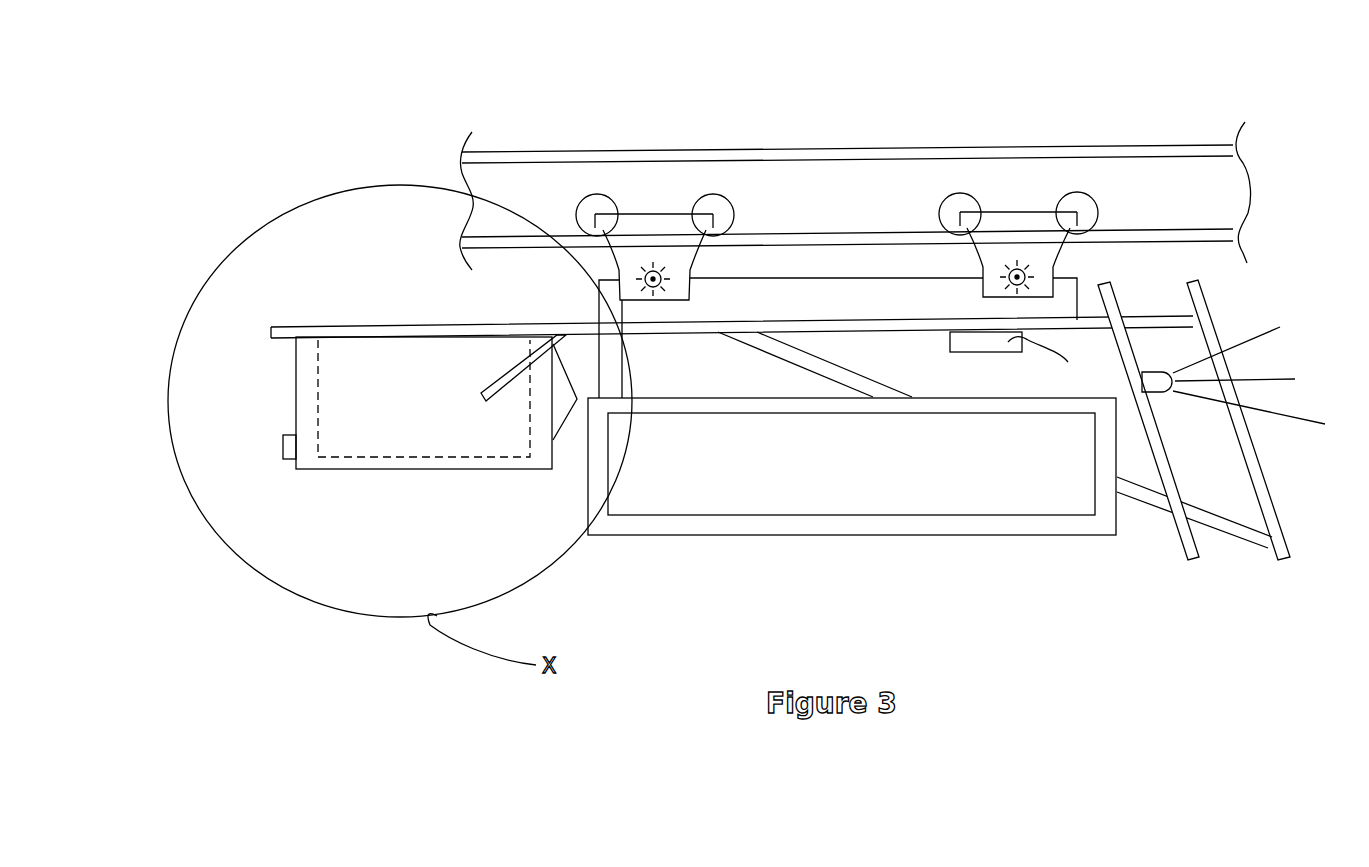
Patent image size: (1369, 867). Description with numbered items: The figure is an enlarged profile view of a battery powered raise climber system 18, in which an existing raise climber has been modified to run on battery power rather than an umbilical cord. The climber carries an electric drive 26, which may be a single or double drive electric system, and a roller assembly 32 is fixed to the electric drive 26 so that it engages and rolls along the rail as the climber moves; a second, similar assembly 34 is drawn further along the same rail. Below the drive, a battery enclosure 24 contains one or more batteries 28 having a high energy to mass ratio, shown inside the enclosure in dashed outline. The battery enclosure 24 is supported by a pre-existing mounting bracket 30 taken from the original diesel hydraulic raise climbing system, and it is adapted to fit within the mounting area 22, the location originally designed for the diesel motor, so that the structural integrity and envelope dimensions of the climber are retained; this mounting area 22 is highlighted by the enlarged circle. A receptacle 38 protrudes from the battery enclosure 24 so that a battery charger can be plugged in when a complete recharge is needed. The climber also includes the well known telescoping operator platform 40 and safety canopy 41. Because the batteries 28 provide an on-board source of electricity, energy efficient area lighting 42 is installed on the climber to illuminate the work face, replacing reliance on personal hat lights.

The battery powered raise climber system 18 is at (892, 569).
The mounting area 22 is at (353, 236).
The battery enclosure 24 is at (343, 470).
The electric drive 26 is at (833, 300).
The batteries 28 is at (440, 435).
The mounting bracket 30 is at (283, 328).
The roller assembly 32 is at (647, 227).
The second trolley 34 is at (1010, 223).
The receptacle 38 is at (284, 446).
The telescoping operator platform 40 is at (1186, 533).
The safety canopy 41 is at (1272, 535).
The area lighting 42 is at (1158, 393).